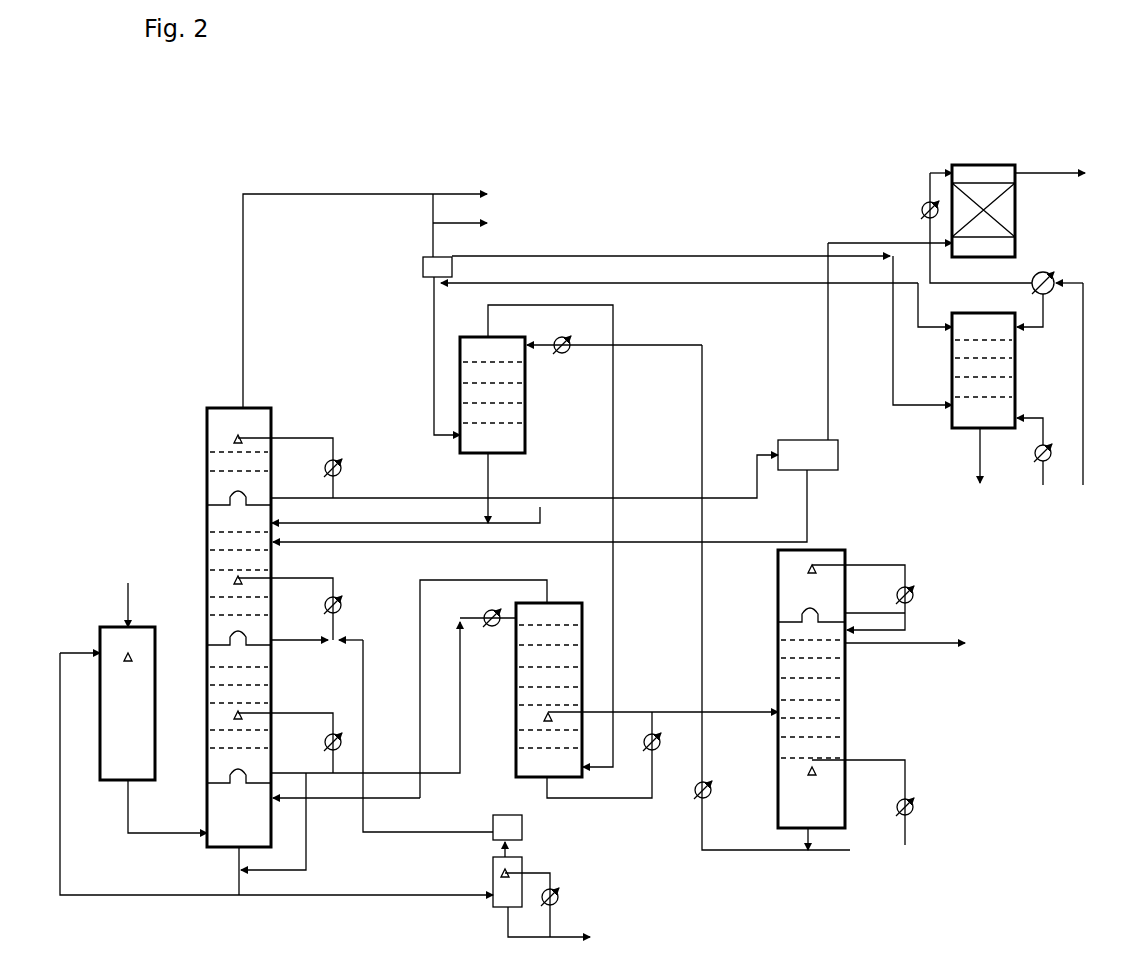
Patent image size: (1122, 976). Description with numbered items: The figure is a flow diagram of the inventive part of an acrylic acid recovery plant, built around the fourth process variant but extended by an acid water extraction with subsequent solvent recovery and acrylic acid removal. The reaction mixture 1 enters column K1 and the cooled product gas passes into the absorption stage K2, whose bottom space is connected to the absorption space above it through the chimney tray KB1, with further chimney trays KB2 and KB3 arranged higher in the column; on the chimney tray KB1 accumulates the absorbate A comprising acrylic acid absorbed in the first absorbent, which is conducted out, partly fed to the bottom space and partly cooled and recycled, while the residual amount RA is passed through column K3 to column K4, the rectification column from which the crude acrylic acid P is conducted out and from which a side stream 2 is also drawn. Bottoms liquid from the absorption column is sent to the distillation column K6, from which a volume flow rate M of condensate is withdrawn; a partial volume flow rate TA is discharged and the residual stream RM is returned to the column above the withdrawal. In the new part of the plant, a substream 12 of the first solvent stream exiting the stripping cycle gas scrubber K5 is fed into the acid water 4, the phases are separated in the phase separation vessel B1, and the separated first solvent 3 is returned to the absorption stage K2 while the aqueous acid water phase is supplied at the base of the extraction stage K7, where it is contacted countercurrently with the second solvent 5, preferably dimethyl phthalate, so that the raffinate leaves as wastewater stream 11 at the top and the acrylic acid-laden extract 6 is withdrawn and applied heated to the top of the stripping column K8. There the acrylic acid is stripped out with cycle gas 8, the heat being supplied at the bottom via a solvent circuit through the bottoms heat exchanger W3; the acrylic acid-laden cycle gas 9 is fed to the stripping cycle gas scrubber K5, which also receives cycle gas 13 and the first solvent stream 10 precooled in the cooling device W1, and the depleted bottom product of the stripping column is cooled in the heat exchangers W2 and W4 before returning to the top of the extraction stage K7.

The reaction mixture 1 is at (127, 594).
The side stream 2 is at (365, 705).
The first solvent 3 is at (380, 488).
The acid water 4 is at (508, 468).
The second solvent 5 is at (972, 228).
The extract 6 is at (1030, 310).
The cycle gas 8 is at (597, 301).
The acrylic acid-laden cycle gas 9 is at (696, 294).
The first solvent stream 10 is at (669, 577).
The wastewater stream 11 is at (1065, 173).
The substream of the first solvent stream 12 is at (514, 514).
The cycle gas 13 is at (431, 356).
The column K1 is at (104, 627).
The absorption stage K2 is at (204, 402).
The column K3 is at (568, 600).
The column K4 is at (774, 568).
The stripping cycle gas scrubber K5 is at (474, 325).
The column K6 is at (483, 874).
The extraction stage K7 is at (954, 155).
The stripping column K8 is at (1024, 373).
The chimney tray KB1 is at (206, 782).
The chimney tray KB2 is at (206, 644).
The chimney tray KB3 is at (206, 504).
The phase separation vessel B1 is at (786, 430).
The cooling device W1 is at (568, 352).
The heat exchanger W2 is at (1055, 268).
The bottoms heat exchanger W3 is at (1030, 453).
The heat exchanger W4 is at (917, 205).
The absorbate A is at (377, 691).
The residual amount of absorbate RA is at (484, 729).
The residual stream RM is at (527, 842).
The volume flow rate M is at (547, 905).
The crude acrylic acid P is at (920, 643).
The partial volume flow rate TA is at (609, 936).